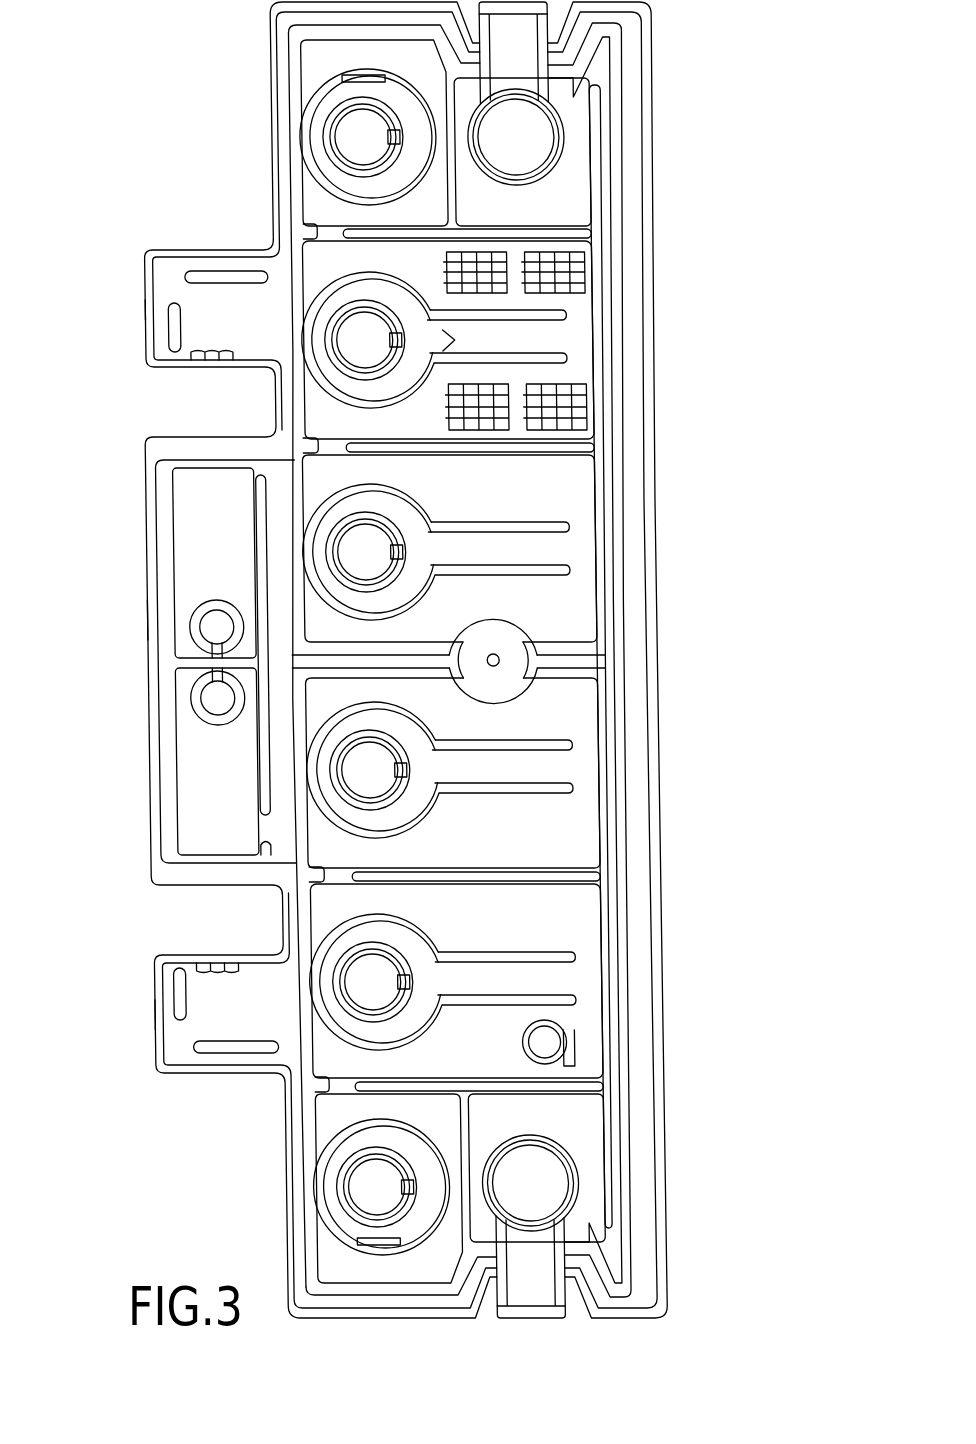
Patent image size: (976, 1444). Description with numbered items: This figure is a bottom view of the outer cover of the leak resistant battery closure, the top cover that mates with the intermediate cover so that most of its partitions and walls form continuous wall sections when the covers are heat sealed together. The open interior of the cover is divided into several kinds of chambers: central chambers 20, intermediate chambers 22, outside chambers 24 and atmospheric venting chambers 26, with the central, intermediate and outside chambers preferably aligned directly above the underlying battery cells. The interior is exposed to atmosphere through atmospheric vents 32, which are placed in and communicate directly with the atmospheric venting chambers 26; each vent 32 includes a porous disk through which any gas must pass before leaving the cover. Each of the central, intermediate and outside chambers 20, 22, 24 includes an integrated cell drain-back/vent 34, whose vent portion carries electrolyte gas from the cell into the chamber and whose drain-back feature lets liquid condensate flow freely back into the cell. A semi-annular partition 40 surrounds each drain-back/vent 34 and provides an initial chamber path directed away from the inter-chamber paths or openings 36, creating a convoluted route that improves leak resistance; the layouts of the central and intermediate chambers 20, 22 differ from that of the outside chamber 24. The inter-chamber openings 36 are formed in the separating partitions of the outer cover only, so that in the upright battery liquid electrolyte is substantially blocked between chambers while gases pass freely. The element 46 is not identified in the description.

The central chambers 20 is at (421, 492).
The intermediate chambers 22 is at (401, 271).
The outside chambers 24 is at (410, 225).
The atmospheric venting chambers 26 is at (468, 217).
The atmospheric vent 32 is at (538, 148).
The cell drain-back/vent 34 is at (349, 148).
The inter-chamber paths or openings 36 is at (330, 233).
The semi-annular partition 40 is at (390, 610).
The conductor traces 46 is at (548, 995).